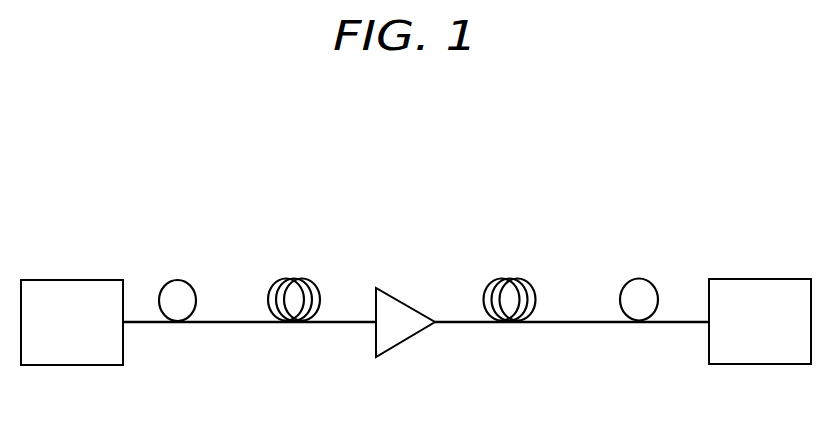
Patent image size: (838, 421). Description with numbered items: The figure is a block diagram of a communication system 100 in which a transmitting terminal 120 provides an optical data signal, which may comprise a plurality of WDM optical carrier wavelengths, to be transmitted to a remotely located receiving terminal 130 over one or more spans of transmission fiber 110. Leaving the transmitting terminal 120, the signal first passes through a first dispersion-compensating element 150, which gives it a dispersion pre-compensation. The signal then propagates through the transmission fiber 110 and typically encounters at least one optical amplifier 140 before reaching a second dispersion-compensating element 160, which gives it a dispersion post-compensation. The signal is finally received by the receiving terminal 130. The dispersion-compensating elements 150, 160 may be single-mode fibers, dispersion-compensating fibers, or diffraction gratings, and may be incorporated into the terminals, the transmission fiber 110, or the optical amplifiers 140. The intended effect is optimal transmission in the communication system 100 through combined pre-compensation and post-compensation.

The communication system 100 is at (387, 115).
The transmission fiber 110 is at (296, 280).
The transmitting terminal 120 is at (79, 280).
The receiving terminal 130 is at (760, 279).
The optical amplifier 140 is at (403, 298).
The first dispersion-compensating element 150 is at (179, 280).
The second dispersion-compensating element 160 is at (642, 279).